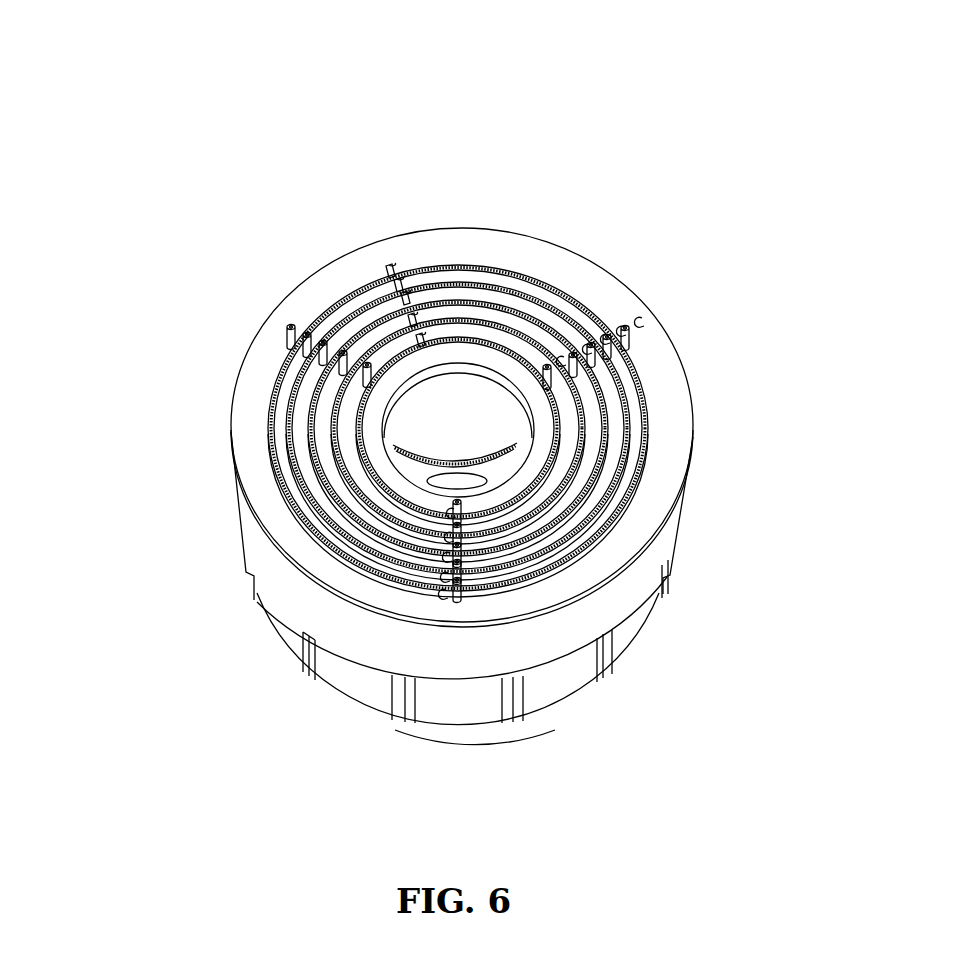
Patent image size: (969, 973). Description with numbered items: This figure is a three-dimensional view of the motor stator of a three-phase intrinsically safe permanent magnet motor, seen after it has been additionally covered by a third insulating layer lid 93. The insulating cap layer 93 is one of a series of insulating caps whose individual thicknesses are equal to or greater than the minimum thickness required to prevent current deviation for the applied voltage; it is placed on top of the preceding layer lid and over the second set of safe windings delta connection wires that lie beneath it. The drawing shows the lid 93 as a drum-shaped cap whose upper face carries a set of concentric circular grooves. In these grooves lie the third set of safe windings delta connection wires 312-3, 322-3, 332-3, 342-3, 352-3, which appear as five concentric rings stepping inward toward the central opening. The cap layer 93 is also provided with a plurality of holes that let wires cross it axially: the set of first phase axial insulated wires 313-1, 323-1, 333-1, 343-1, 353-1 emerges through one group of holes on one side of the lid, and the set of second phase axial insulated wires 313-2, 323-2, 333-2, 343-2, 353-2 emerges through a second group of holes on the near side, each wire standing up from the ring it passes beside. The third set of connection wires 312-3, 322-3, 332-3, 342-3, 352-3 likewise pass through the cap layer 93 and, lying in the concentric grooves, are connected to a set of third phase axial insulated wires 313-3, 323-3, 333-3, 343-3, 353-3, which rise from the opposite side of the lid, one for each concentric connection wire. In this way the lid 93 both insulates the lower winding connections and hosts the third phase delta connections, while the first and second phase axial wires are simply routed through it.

The third insulating layer lid 93 is at (570, 580).
The third set safe windings "Δ" connection wire 312-3 is at (292, 378).
The third set safe windings "Δ" connection wire 322-3 is at (300, 397).
The third set safe windings "Δ" connection wire 332-3 is at (313, 407).
The third set safe windings "Δ" connection wire 342-3 is at (330, 417).
The third set safe windings "Δ" connection wire 352-3 is at (353, 430).
The first phase axial insulated wire 313-1 is at (627, 328).
The first phase axial insulated wire 323-1 is at (609, 338).
The first phase axial insulated wire 333-1 is at (593, 346).
The first phase axial insulated wire 343-1 is at (575, 356).
The first phase axial insulated wire 353-1 is at (549, 368).
The second phase axial insulated wire 313-2 is at (420, 593).
The second phase axial insulated wire 323-2 is at (423, 577).
The second phase axial insulated wire 333-2 is at (427, 557).
The second phase axial insulated wire 343-2 is at (430, 537).
The second phase axial insulated wire 353-2 is at (437, 513).
The third phase axial insulated wire 313-3 is at (291, 326).
The third phase axial insulated wire 323-3 is at (307, 334).
The third phase axial insulated wire 333-3 is at (323, 342).
The third phase axial insulated wire 343-3 is at (343, 352).
The third phase axial insulated wire 353-3 is at (367, 364).